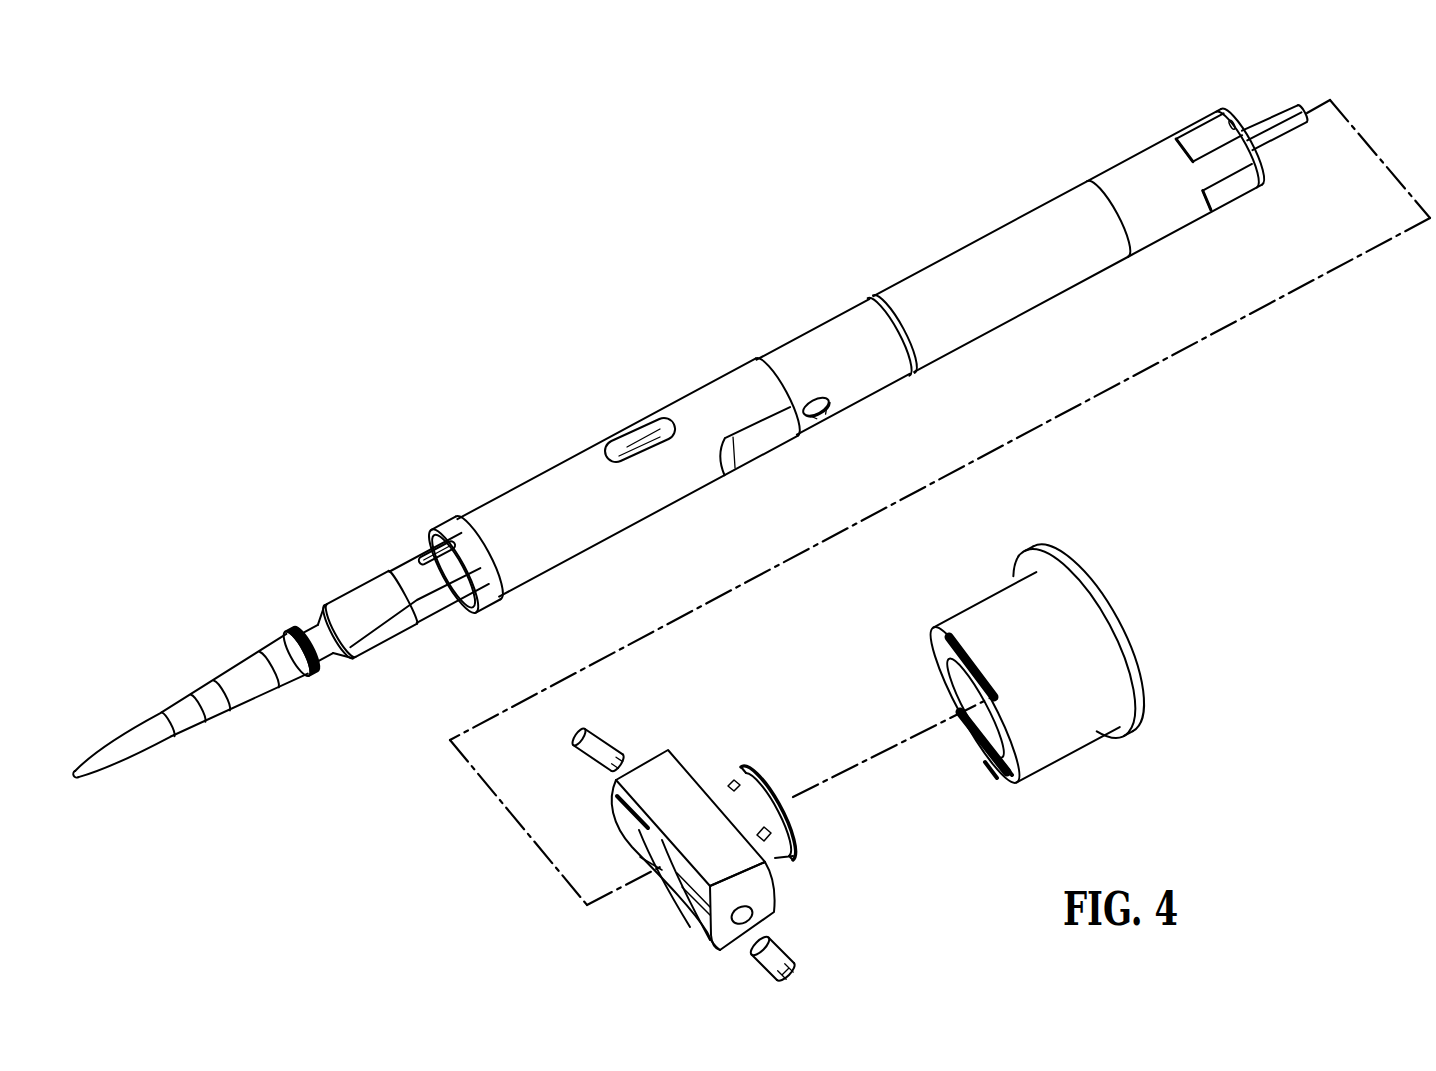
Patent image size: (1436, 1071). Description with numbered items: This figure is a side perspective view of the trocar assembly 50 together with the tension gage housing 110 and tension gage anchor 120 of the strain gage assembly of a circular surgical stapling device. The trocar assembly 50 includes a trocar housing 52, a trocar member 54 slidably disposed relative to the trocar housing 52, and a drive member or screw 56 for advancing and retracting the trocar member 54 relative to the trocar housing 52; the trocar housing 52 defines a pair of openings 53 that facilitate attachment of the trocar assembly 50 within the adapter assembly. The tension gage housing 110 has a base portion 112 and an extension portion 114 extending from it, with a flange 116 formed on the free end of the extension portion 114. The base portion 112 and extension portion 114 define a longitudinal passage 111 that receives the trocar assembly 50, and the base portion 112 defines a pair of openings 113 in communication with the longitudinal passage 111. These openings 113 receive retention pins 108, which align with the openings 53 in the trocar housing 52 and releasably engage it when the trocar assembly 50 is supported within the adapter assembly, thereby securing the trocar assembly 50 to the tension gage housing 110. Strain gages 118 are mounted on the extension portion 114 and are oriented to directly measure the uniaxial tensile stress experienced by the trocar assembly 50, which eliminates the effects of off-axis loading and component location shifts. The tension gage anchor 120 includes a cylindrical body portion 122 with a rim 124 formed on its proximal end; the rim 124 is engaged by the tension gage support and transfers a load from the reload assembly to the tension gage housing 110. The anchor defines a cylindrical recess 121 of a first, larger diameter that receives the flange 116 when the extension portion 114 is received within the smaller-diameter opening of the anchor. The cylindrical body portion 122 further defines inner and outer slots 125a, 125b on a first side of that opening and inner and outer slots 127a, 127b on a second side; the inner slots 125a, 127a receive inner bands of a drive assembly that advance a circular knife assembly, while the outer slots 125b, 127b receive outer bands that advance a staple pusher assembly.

The trocar assembly 50 is at (683, 231).
The trocar housing 52 is at (546, 465).
The openings 53 is at (829, 410).
The trocar member 54 is at (337, 556).
The drive member or screw 56 is at (1258, 110).
The retention pins 108 is at (600, 764).
The tension gage housing 110 is at (777, 891).
The longitudinal passage 111 is at (663, 888).
The base portion 112 is at (649, 773).
The openings 113 is at (750, 915).
The extension portion 114 is at (722, 795).
The flange 116 is at (807, 857).
The strain gages 118 is at (763, 830).
The tension gage anchor 120 is at (990, 588).
The cylindrical recess 121 is at (981, 717).
The cylindrical body portion 122 is at (1080, 743).
The rim 124 is at (1140, 670).
The inner slot 125a is at (985, 690).
The outer slot 125b is at (958, 652).
The inner slot 127a is at (1023, 767).
The outer slot 127b is at (997, 777).